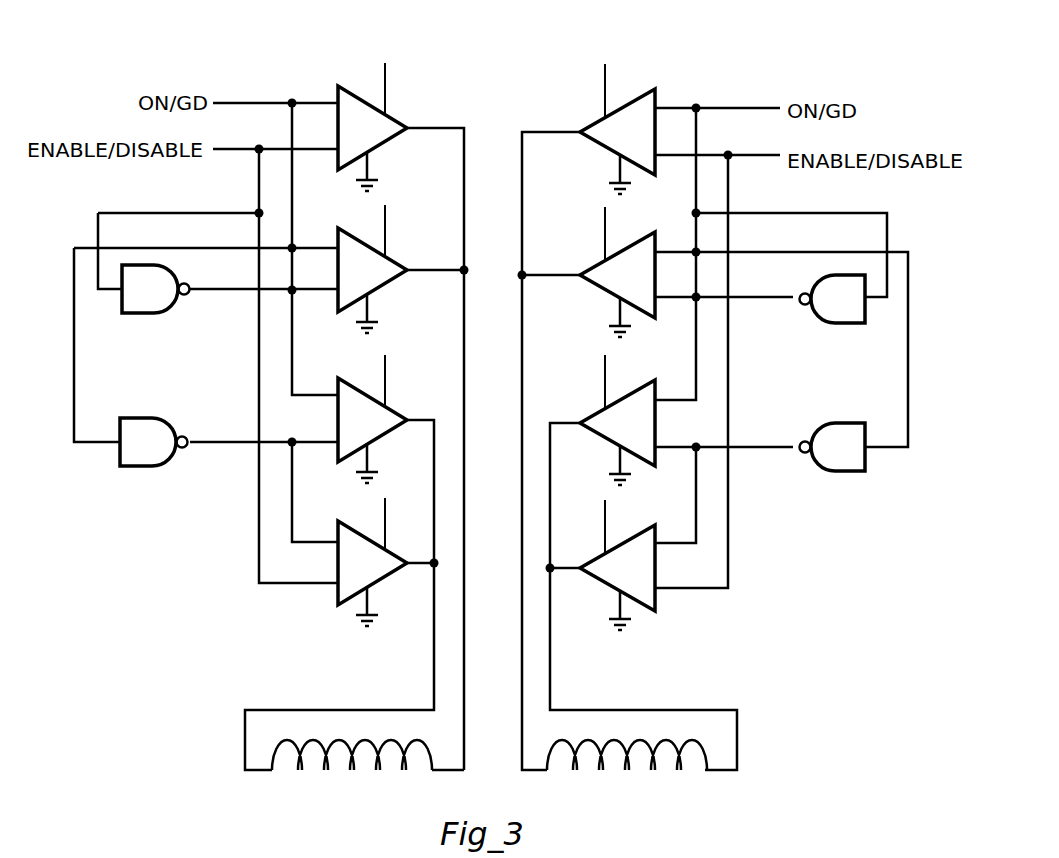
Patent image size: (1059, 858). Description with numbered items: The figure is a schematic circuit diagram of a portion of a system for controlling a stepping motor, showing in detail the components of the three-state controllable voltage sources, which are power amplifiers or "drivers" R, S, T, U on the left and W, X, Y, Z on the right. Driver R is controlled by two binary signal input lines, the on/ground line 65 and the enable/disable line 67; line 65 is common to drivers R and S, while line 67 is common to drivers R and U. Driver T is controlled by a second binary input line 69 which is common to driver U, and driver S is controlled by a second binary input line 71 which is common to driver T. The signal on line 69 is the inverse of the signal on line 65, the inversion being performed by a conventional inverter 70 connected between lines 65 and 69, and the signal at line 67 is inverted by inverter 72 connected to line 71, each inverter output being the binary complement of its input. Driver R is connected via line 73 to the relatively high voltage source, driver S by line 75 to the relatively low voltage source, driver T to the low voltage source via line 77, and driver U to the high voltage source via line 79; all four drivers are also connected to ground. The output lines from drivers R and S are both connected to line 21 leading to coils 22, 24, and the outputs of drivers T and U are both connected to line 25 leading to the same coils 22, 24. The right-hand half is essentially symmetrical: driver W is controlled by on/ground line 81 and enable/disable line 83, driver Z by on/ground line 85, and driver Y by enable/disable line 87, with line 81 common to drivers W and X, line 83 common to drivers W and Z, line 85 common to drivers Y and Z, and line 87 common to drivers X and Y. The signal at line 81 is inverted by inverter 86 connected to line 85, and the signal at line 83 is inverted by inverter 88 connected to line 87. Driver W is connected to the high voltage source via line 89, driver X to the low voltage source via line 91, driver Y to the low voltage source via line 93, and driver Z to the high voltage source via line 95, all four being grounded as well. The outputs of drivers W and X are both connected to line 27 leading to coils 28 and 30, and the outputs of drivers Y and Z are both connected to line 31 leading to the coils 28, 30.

The line 21 is at (464, 598).
The coil 22 is at (352, 761).
The coil 24 is at (346, 771).
The line 25 is at (427, 670).
The line 27 is at (522, 630).
The coil 28 is at (627, 761).
The coil 30 is at (627, 771).
The line 31 is at (550, 683).
The on/ground binary input line 65 is at (276, 103).
The enable/disable binary input line 67 is at (246, 150).
The second binary input line 69 is at (226, 443).
The inverter 70 is at (152, 459).
The second binary input line 71 is at (226, 290).
The inverter 72 is at (154, 306).
The line 73 is at (386, 89).
The line 75 is at (386, 242).
The line 77 is at (386, 392).
The line 79 is at (386, 535).
The on/ground binary input line 81 is at (764, 108).
The enable/disable binary input line 83 is at (771, 155).
The on/ground binary input line 85 is at (770, 447).
The inverter 86 is at (846, 464).
The enable/disable binary input line 87 is at (770, 297).
The inverter 88 is at (846, 316).
The line 89 is at (606, 97).
The line 91 is at (604, 246).
The line 93 is at (592, 386).
The line 95 is at (600, 534).